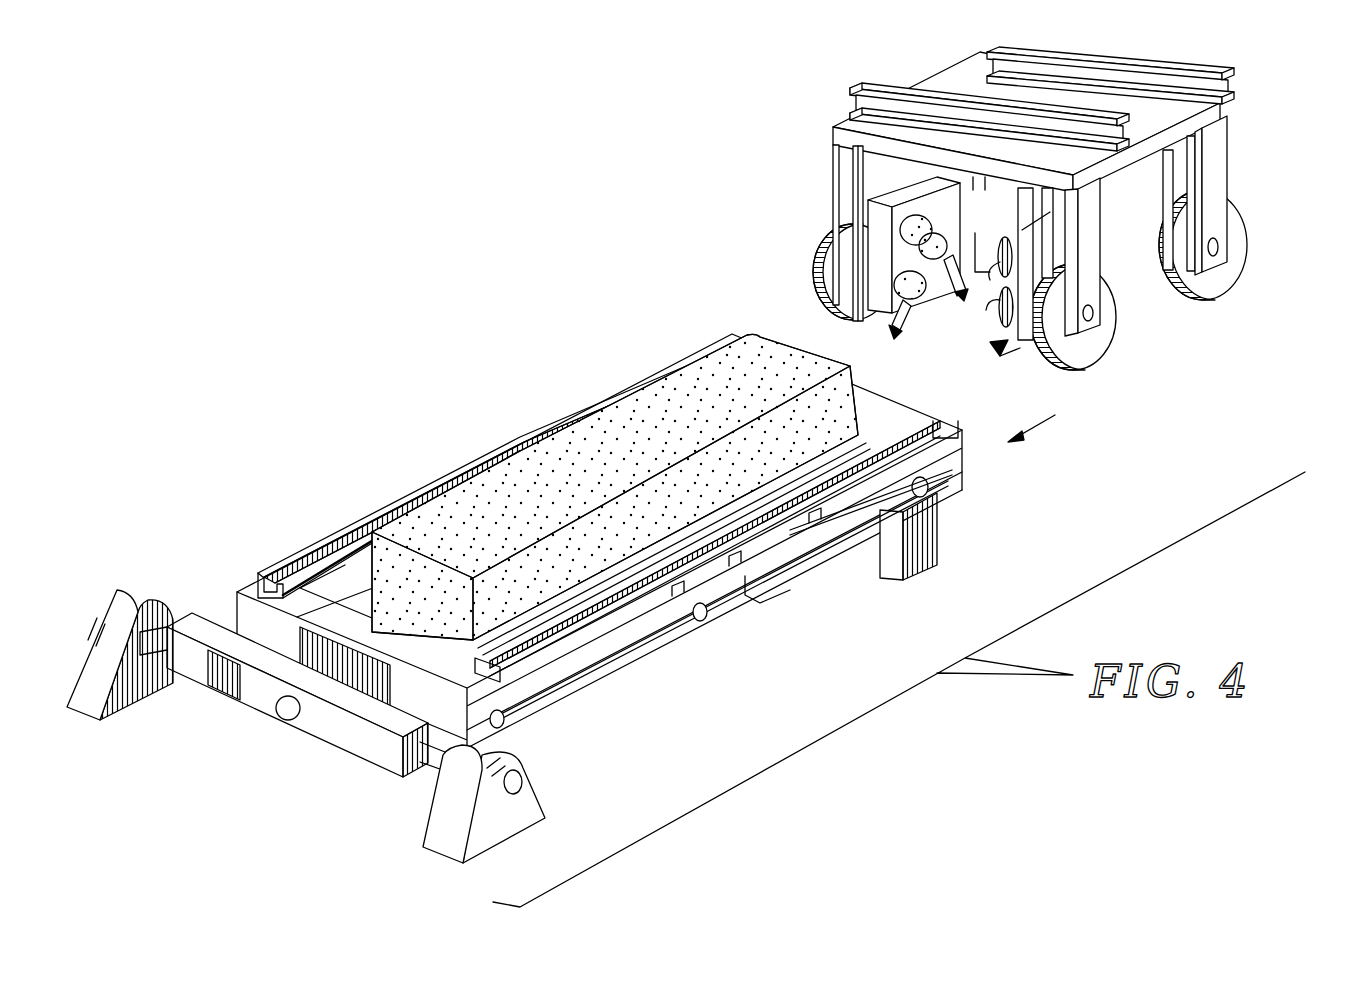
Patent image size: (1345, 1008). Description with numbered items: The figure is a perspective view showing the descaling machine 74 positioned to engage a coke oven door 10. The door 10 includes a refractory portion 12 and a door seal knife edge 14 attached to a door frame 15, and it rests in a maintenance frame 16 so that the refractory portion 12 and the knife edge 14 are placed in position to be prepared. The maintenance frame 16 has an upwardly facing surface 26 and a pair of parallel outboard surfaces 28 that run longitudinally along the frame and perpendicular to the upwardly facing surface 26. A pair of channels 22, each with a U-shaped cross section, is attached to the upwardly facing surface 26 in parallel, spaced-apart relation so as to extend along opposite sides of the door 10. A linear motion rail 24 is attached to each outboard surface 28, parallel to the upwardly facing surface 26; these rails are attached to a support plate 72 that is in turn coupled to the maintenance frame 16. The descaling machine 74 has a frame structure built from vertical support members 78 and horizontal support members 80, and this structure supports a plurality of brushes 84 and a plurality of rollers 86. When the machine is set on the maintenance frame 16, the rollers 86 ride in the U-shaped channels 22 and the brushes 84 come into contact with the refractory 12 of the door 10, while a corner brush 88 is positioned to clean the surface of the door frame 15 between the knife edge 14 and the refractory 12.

The coke oven door 10 is at (512, 432).
The refractory portion 12 is at (625, 418).
The door seal knife edge 14 is at (348, 592).
The door frame 15 is at (347, 610).
The maintenance frame 16 is at (650, 648).
The channels 22 is at (257, 568).
The linear motion rail 24 is at (793, 543).
The upwardly facing surface 26 is at (887, 410).
The outboard surfaces 28 is at (780, 577).
The support plate 72 is at (847, 510).
The descaling machine 74 is at (1244, 153).
The vertical support members 78 is at (838, 181).
The horizontal support members 80 is at (898, 90).
The brushes 84 is at (1013, 240).
The rollers 86 is at (820, 270).
The corner brush 88 is at (898, 318).